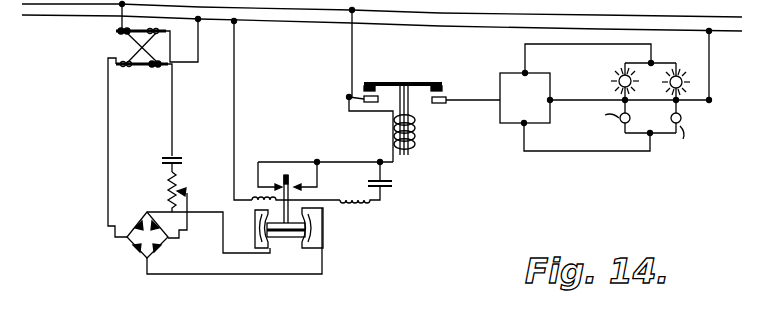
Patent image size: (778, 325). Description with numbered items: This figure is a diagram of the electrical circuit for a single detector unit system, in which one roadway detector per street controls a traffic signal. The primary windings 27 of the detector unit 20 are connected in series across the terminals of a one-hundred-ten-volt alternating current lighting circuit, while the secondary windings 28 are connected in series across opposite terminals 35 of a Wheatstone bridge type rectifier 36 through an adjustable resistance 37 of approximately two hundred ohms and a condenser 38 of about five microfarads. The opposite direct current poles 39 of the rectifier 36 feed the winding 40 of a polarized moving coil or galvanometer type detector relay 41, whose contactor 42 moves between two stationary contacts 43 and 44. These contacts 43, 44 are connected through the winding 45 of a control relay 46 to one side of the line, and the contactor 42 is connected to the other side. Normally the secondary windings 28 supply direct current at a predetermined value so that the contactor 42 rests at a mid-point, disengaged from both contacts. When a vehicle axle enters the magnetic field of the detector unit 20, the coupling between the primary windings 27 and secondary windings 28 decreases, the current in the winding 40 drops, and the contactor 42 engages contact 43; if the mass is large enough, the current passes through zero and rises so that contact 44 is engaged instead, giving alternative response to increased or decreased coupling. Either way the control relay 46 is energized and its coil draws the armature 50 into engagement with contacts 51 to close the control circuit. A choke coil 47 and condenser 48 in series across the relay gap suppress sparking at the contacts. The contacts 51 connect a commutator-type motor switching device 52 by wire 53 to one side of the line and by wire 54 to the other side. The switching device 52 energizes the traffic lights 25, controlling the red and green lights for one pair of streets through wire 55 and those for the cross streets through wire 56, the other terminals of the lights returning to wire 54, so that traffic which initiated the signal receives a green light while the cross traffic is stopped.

The detector unit 20 is at (103, 49).
The primary windings 27 is at (118, 33).
The secondary windings 28 is at (162, 31).
The traffic lights 25 is at (657, 148).
The terminals 35 is at (124, 243).
The rectifier 36 is at (143, 250).
The adjustable resistance 37 is at (167, 186).
The condenser 38 is at (183, 161).
The direct current poles 39 is at (146, 212).
The winding 40 is at (287, 239).
The detector relay 41 is at (334, 253).
The contactor 42 is at (287, 175).
The stationary contact 43 is at (276, 185).
The stationary contact 44 is at (302, 185).
The winding 45 is at (416, 136).
The control relay 46 is at (416, 109).
The choke coil 47 is at (354, 205).
The condenser 48 is at (393, 184).
The armature 50 is at (471, 106).
The contacts 51 is at (379, 103).
The motor switching device 52 is at (504, 77).
The wire 53 is at (352, 95).
The wire 54 is at (449, 100).
The wire 55 is at (565, 44).
The wire 56 is at (583, 152).